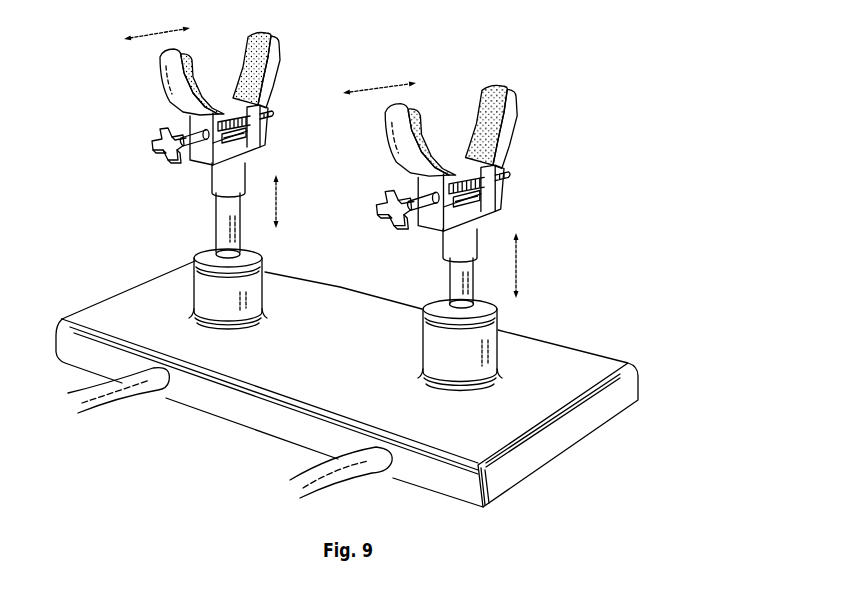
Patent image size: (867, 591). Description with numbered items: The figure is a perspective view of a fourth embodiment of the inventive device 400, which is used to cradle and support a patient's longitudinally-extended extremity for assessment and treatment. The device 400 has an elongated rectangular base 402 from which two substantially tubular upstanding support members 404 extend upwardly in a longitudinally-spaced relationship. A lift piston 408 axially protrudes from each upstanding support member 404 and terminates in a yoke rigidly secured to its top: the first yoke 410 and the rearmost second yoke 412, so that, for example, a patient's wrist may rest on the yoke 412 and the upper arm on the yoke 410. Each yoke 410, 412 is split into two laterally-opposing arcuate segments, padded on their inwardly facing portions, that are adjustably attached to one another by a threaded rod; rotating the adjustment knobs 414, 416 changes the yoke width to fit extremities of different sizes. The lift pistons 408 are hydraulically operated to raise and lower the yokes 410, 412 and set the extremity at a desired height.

The inventive device 400 is at (650, 183).
The elongated rectangular base 402 is at (573, 433).
The upstanding support member 404 is at (212, 292).
The lift piston 408 is at (225, 237).
The first yoke 410 is at (522, 125).
The second yoke 412 is at (283, 68).
The adjustment knob 414 is at (390, 208).
The adjustment knob 416 is at (168, 150).